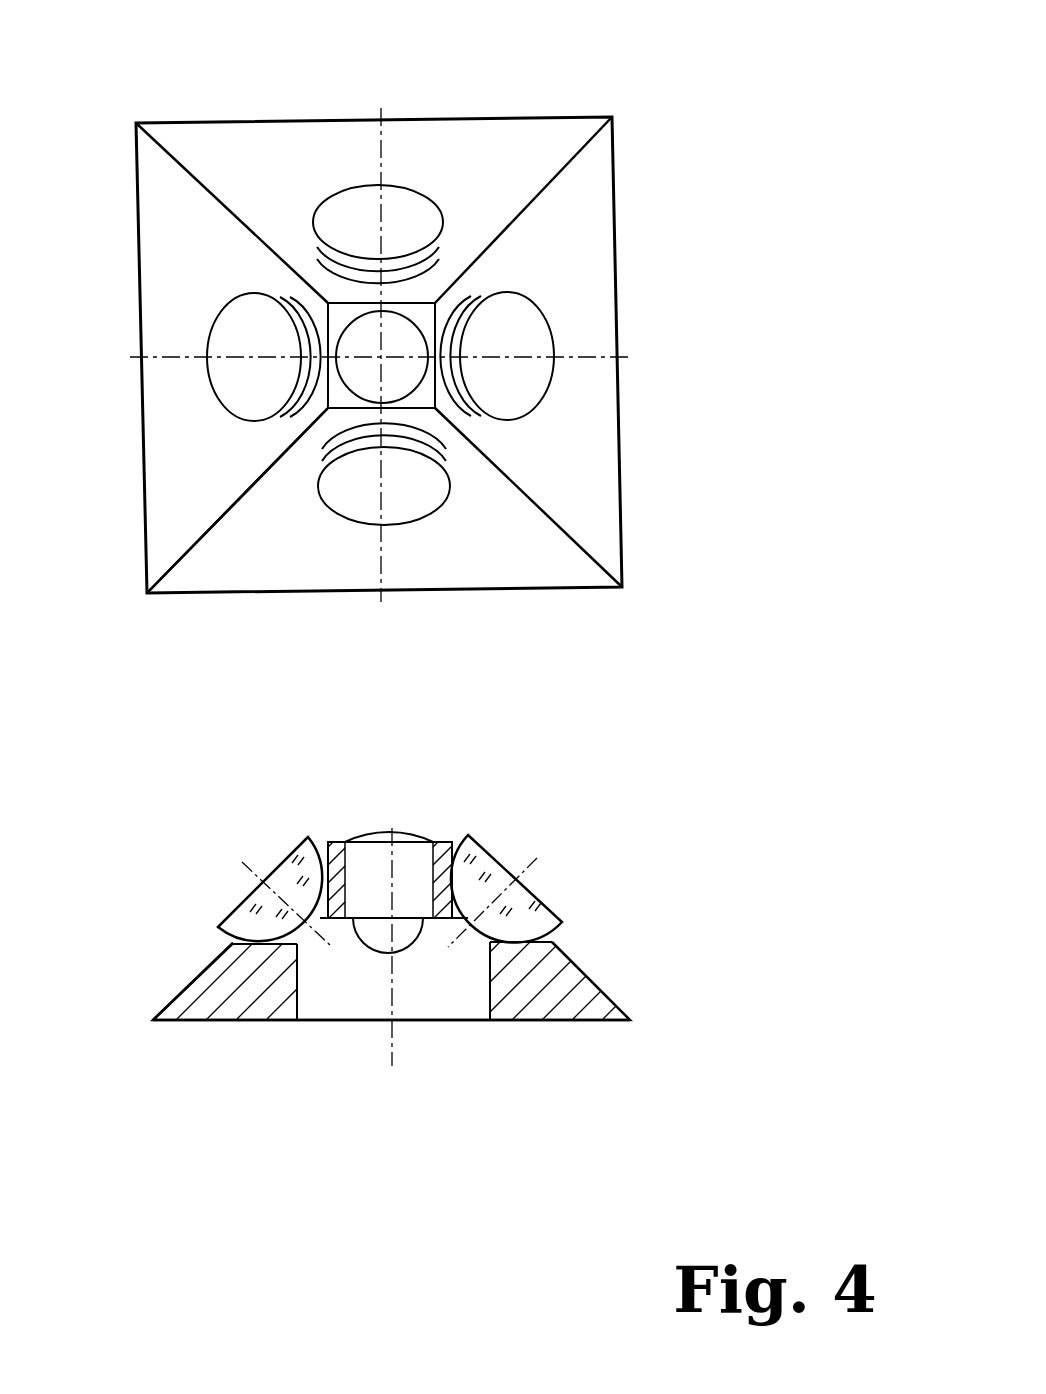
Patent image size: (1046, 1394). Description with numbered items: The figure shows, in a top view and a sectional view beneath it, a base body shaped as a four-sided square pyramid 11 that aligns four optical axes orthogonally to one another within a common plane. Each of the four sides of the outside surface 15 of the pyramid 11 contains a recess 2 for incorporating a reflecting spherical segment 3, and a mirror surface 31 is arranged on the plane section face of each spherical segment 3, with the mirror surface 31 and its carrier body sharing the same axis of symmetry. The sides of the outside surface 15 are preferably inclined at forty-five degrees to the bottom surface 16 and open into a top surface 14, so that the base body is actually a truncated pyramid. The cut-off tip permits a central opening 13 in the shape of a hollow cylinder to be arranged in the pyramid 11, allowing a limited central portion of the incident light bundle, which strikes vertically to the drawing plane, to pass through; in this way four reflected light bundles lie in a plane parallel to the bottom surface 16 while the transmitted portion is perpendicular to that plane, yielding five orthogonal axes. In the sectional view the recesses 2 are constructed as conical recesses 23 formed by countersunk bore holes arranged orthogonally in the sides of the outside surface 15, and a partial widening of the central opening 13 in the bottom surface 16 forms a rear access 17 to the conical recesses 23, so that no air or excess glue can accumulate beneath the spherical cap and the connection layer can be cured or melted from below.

The square pyramid 11 is at (289, 120).
The recess 2 is at (445, 253).
The mirror surface 31 is at (503, 328).
The spherical segment 3 is at (535, 374).
The top surface 14 is at (424, 392).
The central opening 13 is at (402, 382).
The outside surface 15 is at (190, 977).
The bottom surface 16 is at (240, 1020).
The rear access 17 is at (450, 982).
The conical recess 23 is at (550, 938).